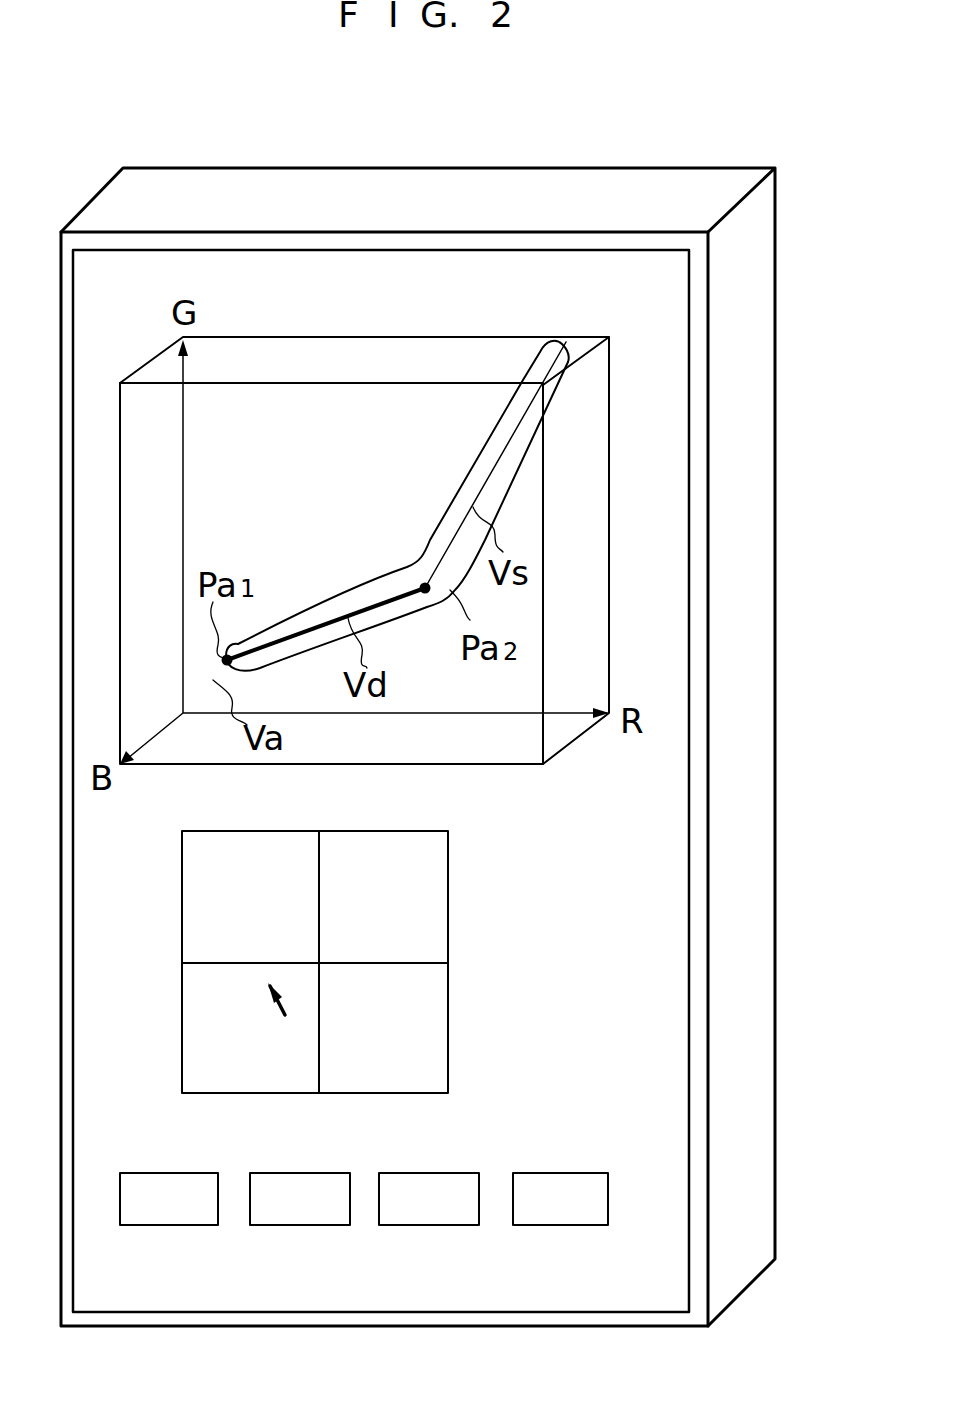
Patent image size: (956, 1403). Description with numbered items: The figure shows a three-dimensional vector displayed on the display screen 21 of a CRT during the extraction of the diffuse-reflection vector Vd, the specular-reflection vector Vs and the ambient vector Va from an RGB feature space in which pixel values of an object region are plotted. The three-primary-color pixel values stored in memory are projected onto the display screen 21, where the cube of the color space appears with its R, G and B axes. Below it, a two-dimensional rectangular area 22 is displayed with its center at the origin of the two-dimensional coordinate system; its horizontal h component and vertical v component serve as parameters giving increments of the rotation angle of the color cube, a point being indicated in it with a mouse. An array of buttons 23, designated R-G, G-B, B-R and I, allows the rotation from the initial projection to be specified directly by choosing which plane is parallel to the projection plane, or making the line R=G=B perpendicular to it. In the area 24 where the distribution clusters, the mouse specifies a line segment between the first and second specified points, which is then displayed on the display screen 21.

The display screen 21 is at (662, 843).
The two-dimensional rectangular area 22 is at (432, 831).
The array of buttons 23 is at (620, 1230).
The area where the distribution clusters 24 is at (528, 378).